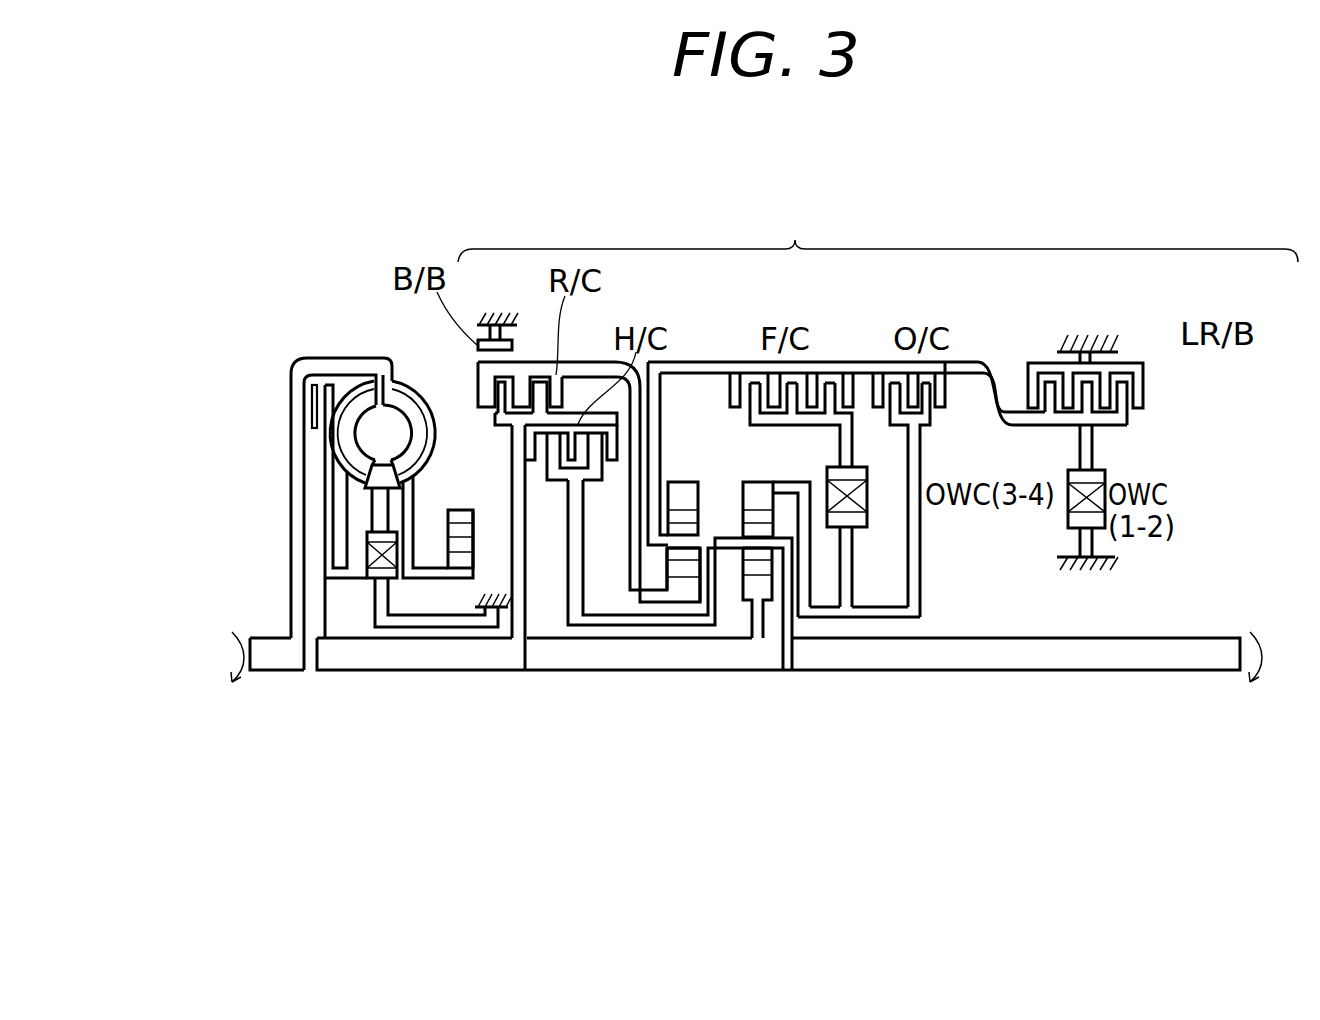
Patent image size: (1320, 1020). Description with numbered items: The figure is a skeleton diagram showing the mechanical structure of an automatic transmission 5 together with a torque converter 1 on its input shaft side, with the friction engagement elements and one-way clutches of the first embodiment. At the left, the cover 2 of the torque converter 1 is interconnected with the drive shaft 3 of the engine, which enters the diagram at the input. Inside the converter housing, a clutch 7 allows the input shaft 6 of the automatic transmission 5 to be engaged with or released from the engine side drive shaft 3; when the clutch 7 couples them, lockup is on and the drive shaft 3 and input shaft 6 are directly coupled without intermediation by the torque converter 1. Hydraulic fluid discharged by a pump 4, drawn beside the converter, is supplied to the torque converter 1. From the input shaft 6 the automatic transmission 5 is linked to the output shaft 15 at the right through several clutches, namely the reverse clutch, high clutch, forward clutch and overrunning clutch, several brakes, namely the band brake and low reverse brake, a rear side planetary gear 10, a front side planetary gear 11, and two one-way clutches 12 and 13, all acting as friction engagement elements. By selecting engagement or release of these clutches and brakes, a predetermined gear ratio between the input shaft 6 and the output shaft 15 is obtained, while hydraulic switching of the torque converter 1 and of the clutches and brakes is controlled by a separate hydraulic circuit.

The torque converter 1 is at (376, 405).
The cover 2 is at (290, 414).
The drive shaft 3 is at (265, 637).
The pump 4 is at (473, 542).
The automatic transmission 5 is at (796, 240).
The input shaft 6 is at (531, 660).
The clutch 7 is at (313, 386).
The rear side planetary gear 10 is at (683, 592).
The front side planetary gear 11 is at (750, 592).
The one-way clutch 12 is at (866, 492).
The one-way clutch 13 is at (1104, 477).
The output shaft 15 is at (1131, 660).